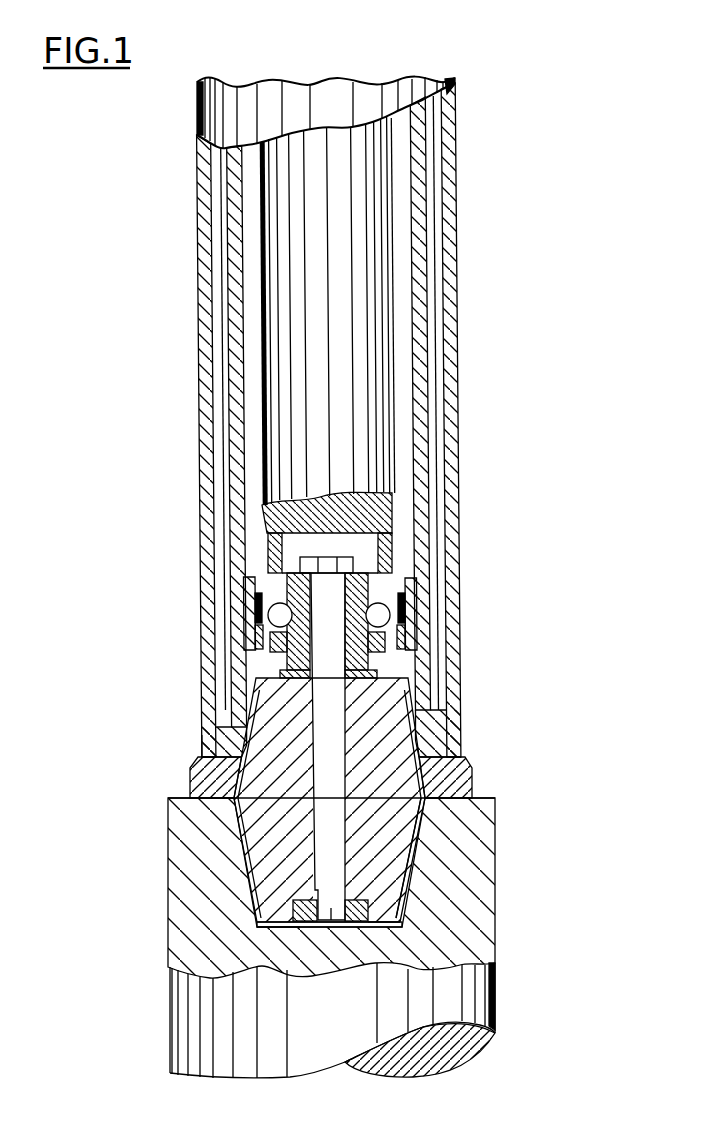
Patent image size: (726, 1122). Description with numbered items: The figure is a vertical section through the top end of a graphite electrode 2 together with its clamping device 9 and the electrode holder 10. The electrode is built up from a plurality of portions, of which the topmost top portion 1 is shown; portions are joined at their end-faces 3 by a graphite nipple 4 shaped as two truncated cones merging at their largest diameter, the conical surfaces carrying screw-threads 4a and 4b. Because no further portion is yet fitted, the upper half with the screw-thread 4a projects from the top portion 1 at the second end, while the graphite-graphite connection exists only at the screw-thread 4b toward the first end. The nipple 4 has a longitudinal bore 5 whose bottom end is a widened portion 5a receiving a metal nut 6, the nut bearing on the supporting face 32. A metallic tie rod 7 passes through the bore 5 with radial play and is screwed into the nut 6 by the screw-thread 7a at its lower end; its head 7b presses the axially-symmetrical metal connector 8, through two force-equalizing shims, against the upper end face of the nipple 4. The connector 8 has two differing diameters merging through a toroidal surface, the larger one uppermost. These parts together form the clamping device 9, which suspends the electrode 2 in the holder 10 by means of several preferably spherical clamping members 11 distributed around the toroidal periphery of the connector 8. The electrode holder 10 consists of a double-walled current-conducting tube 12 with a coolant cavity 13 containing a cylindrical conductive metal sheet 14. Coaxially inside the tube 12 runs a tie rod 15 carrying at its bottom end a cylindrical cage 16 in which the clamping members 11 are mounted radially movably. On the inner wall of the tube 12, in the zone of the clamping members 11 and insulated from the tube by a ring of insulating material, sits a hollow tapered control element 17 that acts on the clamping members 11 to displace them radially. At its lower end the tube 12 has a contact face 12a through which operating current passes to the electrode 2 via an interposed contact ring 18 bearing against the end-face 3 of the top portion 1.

The top portion 1 is at (480, 953).
The graphite electrode 2 is at (565, 850).
The end-face 3 is at (176, 795).
The nipple 4 is at (260, 843).
The screw-thread 4a is at (407, 700).
The screw-thread 4b is at (362, 896).
The longitudinal bore 5 is at (307, 867).
The widened portion 5a is at (290, 910).
The nut 6 is at (320, 970).
The tie rod 7 is at (333, 763).
The screw-thread 7a is at (365, 930).
The head 7b is at (353, 565).
The connector 8 is at (400, 590).
The clamping device 9 is at (183, 635).
The electrode holder 10 is at (322, 100).
The clamping members 11 is at (405, 614).
The current-conducting tube 12 is at (445, 248).
The contact face 12a is at (200, 753).
The coolant cavity 13 is at (443, 376).
The conductive metal sheet 14 is at (437, 460).
The tie rod 15 is at (372, 176).
The cylindrical cage 16 is at (393, 540).
The control element 17 is at (413, 642).
The contact ring 18 is at (460, 782).
The supporting face 32 is at (362, 868).